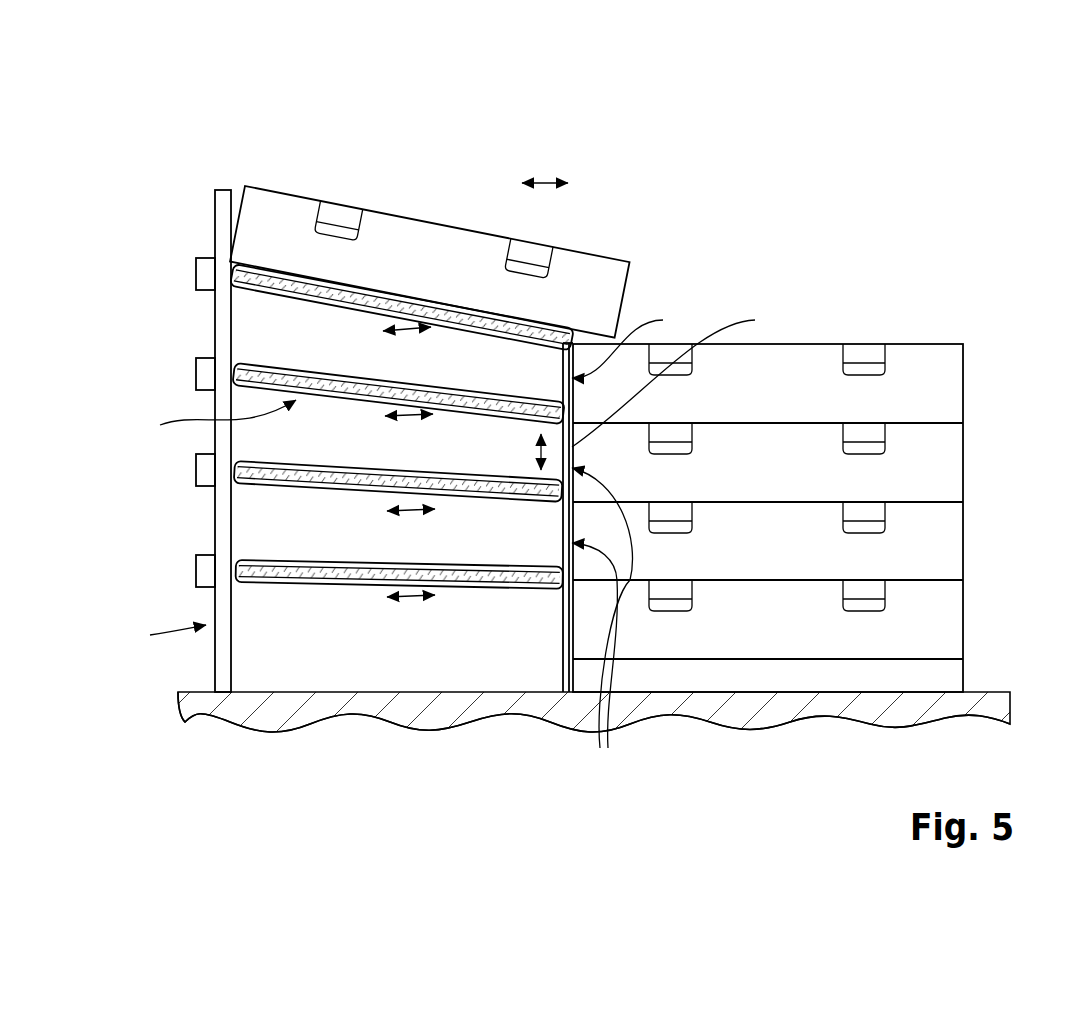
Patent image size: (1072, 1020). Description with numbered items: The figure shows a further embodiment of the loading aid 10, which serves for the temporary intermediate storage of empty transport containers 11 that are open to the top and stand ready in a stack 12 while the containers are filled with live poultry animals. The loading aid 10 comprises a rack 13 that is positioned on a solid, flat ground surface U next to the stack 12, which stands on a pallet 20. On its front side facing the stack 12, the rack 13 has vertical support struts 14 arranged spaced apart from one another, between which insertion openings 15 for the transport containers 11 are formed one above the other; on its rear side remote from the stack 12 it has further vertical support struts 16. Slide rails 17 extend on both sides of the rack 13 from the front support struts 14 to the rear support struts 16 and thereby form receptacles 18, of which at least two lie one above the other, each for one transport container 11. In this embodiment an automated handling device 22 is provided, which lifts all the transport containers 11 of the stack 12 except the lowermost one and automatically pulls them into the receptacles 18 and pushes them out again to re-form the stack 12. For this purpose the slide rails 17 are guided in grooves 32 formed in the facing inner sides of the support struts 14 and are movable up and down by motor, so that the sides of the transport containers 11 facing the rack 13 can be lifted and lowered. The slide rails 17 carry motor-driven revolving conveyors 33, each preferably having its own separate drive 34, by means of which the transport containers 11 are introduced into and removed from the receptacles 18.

The loading aid 10 is at (344, 427).
The transport container 11 is at (412, 250).
The stack 12 is at (897, 245).
The rack 13 is at (160, 637).
The vertical support strut 14 is at (558, 628).
The insertion opening 15 is at (635, 543).
The vertical support strut 16 is at (226, 513).
The slide rail 17 is at (313, 292).
The receptacle 18 is at (494, 380).
The pallet 20 is at (713, 677).
The handling device 22 is at (208, 422).
The groove 32 is at (681, 375).
The revolving conveyor 33 is at (333, 322).
The drive 34 is at (208, 275).
The ground surface U is at (862, 700).